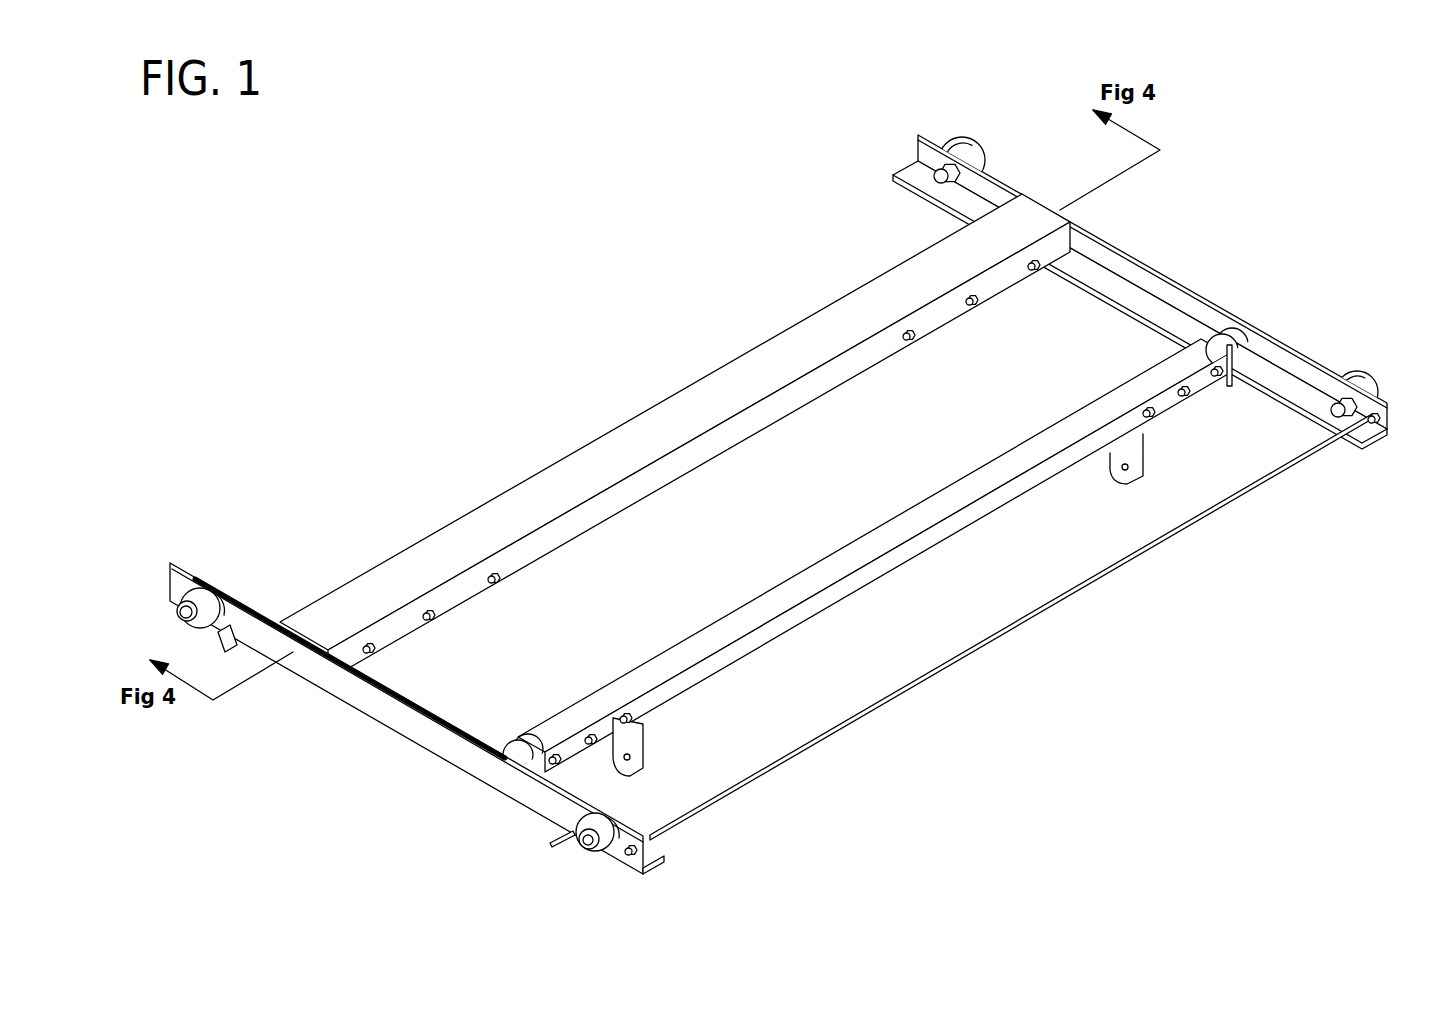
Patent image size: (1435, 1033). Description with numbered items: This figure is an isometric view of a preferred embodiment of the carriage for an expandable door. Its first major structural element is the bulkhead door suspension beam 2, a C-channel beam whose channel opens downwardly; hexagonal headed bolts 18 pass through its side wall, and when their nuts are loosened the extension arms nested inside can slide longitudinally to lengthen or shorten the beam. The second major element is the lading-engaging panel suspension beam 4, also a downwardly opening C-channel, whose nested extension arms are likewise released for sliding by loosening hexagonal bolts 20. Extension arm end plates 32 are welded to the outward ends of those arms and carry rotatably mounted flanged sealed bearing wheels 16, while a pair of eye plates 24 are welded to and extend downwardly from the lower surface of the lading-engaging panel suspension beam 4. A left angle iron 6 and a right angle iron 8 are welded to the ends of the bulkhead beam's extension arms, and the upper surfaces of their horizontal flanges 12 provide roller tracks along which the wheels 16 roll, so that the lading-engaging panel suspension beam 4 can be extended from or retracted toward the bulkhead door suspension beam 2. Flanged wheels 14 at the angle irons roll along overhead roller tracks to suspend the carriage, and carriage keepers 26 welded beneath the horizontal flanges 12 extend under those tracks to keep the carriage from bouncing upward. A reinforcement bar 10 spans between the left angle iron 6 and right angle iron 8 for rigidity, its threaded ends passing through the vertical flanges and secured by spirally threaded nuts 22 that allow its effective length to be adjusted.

The bulkhead door suspension beam 2 is at (727, 403).
The lading-engaging panel suspension beam 4 is at (863, 553).
The left angle iron 6 is at (450, 747).
The right angle iron 8 is at (1117, 236).
The reinforcement bar 10 is at (1005, 641).
The horizontal flanges 12 is at (1168, 322).
The flanged wheels 14 is at (966, 140).
The flanged sealed bearing wheels 16 is at (518, 740).
The hexagonal headed bolts 18 is at (500, 582).
The hexagonal bolts 20 is at (640, 716).
The spirally threaded nuts 22 is at (638, 858).
The eye plates 24 is at (645, 758).
The carriage keepers 26 is at (238, 636).
The extension arm end plates 32 is at (1228, 388).